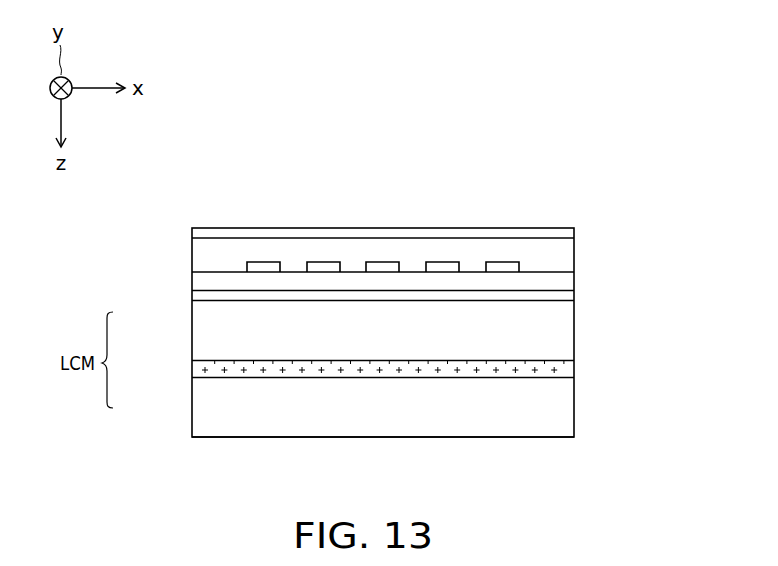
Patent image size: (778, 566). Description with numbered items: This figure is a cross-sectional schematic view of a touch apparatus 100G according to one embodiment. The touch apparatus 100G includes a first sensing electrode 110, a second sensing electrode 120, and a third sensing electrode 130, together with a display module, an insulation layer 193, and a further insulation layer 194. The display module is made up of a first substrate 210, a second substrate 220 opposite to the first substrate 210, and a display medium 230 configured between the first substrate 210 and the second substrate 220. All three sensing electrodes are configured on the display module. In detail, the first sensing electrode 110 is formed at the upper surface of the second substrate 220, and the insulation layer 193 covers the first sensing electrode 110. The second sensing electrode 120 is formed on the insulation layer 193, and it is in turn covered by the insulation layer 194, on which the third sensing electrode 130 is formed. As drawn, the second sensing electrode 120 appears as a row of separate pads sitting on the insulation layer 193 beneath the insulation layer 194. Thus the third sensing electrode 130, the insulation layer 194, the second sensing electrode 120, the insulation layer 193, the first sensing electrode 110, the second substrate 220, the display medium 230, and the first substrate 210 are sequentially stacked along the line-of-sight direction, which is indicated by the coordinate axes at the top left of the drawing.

The touch apparatus 100G is at (720, 438).
The third sensing electrode 130 is at (577, 236).
The insulation layer 194 is at (565, 256).
The second sensing electrode 120 is at (521, 264).
The insulation layer 193 is at (573, 284).
The first sensing electrode 110 is at (573, 297).
The second substrate 220 is at (192, 333).
The display medium 230 is at (192, 372).
The first substrate 210 is at (192, 406).